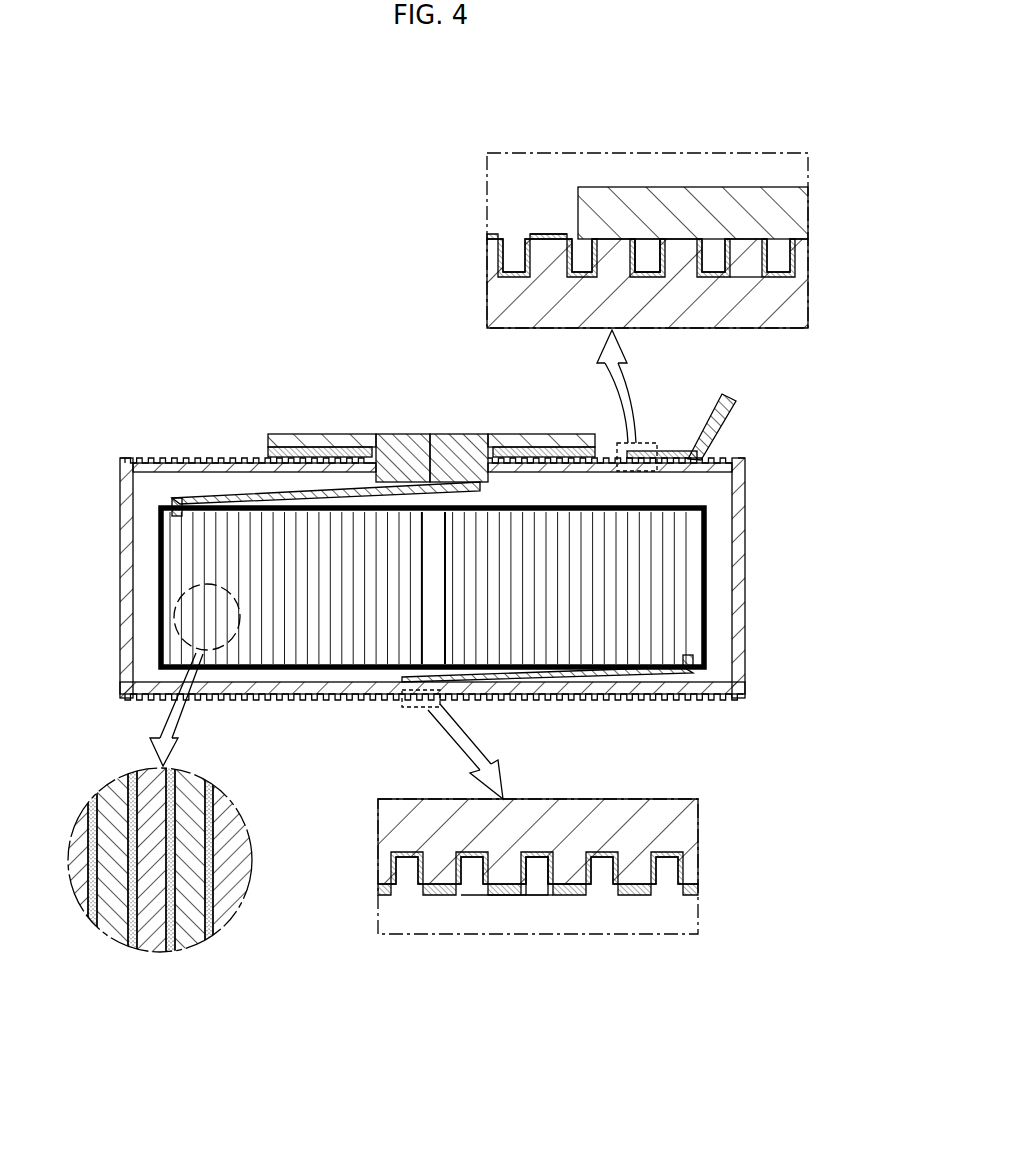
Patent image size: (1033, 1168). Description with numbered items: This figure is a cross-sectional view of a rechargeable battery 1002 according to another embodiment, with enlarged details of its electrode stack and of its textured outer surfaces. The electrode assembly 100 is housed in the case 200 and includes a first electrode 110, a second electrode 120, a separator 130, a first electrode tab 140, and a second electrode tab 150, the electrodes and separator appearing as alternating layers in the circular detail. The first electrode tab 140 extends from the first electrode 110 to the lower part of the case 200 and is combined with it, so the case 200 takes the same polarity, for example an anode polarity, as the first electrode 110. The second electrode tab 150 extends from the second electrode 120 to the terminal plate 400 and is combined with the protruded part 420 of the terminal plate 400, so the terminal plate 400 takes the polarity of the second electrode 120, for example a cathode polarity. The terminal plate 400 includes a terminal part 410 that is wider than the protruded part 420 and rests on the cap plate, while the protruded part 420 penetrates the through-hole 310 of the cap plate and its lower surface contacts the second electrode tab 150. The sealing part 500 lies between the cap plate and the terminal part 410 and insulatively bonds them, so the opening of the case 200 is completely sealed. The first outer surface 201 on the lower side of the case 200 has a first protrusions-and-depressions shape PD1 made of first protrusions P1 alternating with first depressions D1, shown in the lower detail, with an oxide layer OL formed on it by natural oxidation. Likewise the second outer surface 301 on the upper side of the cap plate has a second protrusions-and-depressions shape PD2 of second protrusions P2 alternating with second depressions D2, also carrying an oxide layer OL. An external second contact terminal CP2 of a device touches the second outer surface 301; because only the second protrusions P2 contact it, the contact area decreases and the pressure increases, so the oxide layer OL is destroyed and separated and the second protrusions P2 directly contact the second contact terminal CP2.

The rechargeable battery 1002 is at (453, 91).
The electrode assembly 100 is at (349, 636).
The first electrode 110 is at (152, 953).
The second electrode 120 is at (192, 953).
The separator 130 is at (213, 875).
The first electrode tab 140 is at (648, 676).
The second electrode tab 150 is at (208, 497).
The case 200 is at (760, 656).
The first outer surface 201 is at (576, 701).
The second outer surface 301 is at (147, 458).
The through-hole 310 is at (452, 458).
The terminal plate 400 is at (419, 406).
The terminal part 410 is at (528, 445).
The protruded part 420 is at (426, 470).
The sealing part 500 is at (565, 449).
The second contact terminal CP2 is at (628, 195).
The second protrusions P2 is at (680, 255).
The oxide layer OL is at (548, 233).
The second depressions D2 is at (650, 277).
The second protrusions-and-depressions shape PD2 is at (753, 266).
The first depressions D1 is at (538, 852).
The first protrusions P1 is at (510, 895).
The first protrusions-and-depressions shape PD1 is at (590, 882).